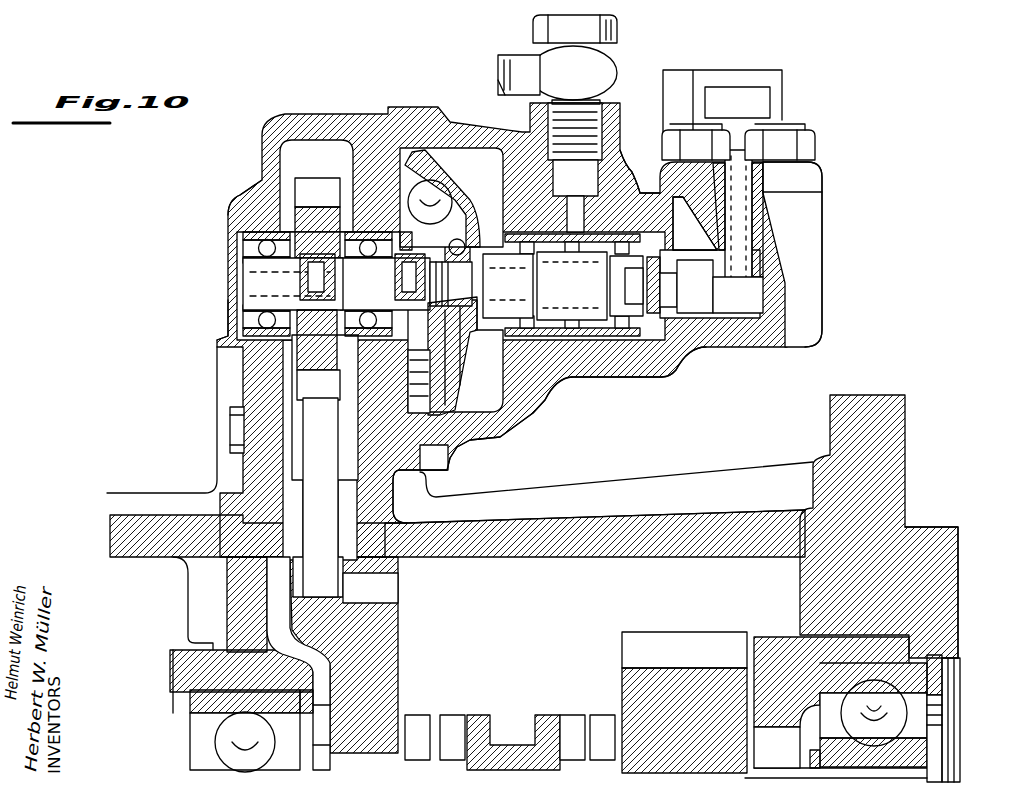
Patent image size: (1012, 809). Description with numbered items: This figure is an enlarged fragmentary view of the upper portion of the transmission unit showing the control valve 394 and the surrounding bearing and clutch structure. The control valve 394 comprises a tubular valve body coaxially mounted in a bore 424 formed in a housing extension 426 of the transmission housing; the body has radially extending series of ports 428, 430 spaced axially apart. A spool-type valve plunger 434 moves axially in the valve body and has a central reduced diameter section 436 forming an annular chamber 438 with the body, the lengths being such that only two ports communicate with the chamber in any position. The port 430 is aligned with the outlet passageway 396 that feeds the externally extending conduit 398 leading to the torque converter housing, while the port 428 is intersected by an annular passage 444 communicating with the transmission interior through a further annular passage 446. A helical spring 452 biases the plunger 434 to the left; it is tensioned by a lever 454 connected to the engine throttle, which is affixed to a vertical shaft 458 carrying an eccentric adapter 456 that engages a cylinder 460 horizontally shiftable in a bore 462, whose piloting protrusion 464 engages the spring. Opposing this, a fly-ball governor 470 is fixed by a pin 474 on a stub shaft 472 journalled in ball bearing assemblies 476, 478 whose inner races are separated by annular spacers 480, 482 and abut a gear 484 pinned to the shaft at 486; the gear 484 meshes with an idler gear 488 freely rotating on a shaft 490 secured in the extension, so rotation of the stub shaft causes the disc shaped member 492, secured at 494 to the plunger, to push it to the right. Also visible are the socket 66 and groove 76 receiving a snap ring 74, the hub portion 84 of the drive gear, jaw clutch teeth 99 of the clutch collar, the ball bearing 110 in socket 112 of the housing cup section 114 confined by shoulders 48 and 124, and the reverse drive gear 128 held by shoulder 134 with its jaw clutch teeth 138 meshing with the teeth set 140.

The annular shoulder 48 is at (820, 675).
The socket 66 is at (266, 696).
The snap ring 74 is at (333, 704).
The annular peripheral groove 76 is at (322, 664).
The hub portion 84 is at (410, 715).
The jaw clutch teeth 99 is at (450, 720).
The ball bearing 110 is at (909, 658).
The socket 112 is at (884, 665).
The housing cup section 114 is at (915, 535).
The annular shoulder 124 is at (944, 712).
The reverse drive gear 128 is at (652, 640).
The shoulder 134 is at (749, 768).
The jaw clutch teeth 138 is at (592, 716).
The jaw clutch teeth set 140 is at (555, 716).
The control valve 394 is at (505, 425).
The outlet passageway 396 is at (590, 214).
The conduit 398 is at (516, 60).
The bore 424 is at (648, 355).
The housing extension 426 is at (822, 205).
The port 428 is at (552, 232).
The port 430 is at (572, 286).
The valve plunger 434 is at (643, 187).
The reduced diameter section 436 is at (560, 340).
The annular chamber 438 is at (568, 342).
The annular passage 444 is at (508, 286).
The annular passage 446 is at (451, 356).
The helical spring 452 is at (650, 270).
The lever 454 is at (782, 84).
The eccentric adapter 456 is at (738, 308).
The vertical shaft 458 is at (753, 210).
The cylinder 460 is at (694, 301).
The bore 462 is at (703, 258).
The piloting protrusion 464 is at (658, 294).
The fly-ball governor 470 is at (462, 198).
The stub shaft 472 is at (228, 315).
The pin 474 is at (392, 278).
The ball bearing assembly 476 is at (250, 215).
The ball bearing assembly 478 is at (317, 218).
The annular spacer 480 is at (242, 298).
The annular spacer 482 is at (317, 340).
The gear 484 is at (318, 385).
The pin 486 is at (296, 280).
The idler gear 488 is at (303, 513).
The shaft 490 is at (286, 446).
The disc shaped member 492 is at (433, 186).
The securing point 494 is at (478, 250).